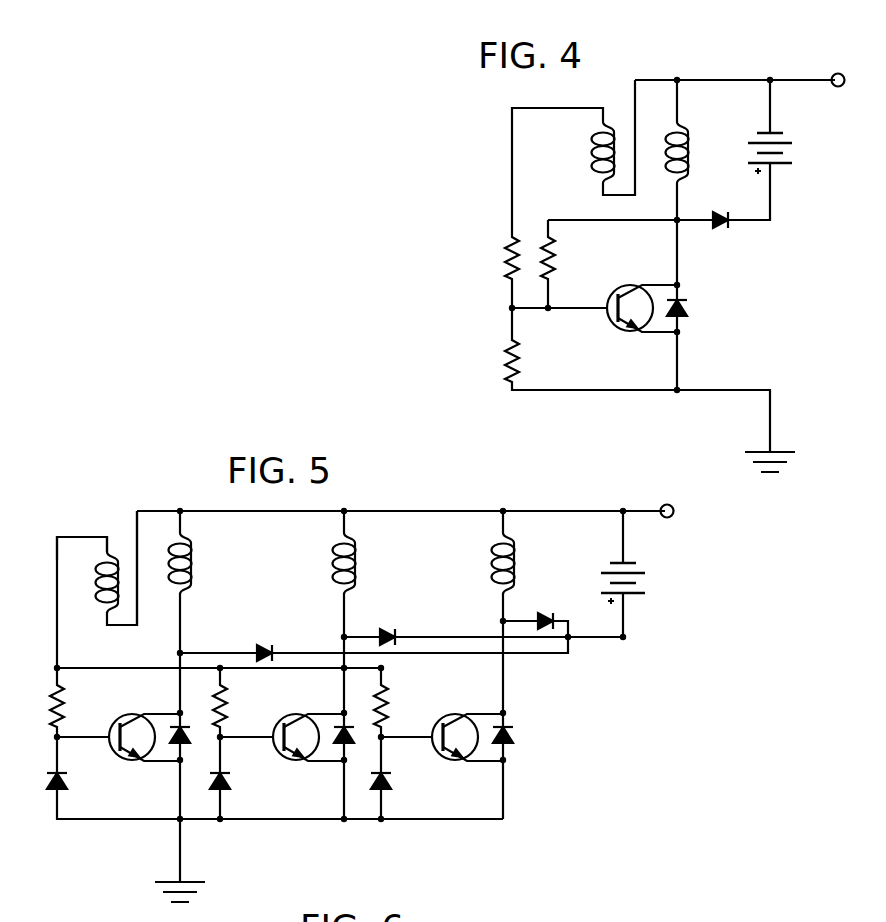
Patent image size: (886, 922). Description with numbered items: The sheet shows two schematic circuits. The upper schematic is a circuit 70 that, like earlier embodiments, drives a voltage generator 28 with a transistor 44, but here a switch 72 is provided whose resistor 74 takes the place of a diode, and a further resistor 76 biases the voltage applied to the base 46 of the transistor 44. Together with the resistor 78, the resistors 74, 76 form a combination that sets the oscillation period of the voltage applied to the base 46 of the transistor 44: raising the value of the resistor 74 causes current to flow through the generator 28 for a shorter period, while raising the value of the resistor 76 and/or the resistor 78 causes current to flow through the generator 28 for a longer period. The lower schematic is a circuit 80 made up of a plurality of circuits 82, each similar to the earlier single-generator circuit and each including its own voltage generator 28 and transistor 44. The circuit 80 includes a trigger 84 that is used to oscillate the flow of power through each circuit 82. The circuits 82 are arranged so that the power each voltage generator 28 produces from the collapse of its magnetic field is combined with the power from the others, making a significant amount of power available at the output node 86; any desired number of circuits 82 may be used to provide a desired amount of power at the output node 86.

In FIG. 4, the voltage generator 28 is at (702, 75).
In FIG. 5, the voltage generator 28 is at (197, 563).
In FIG. 4, the switch 72 is at (503, 188).
In FIG. 4, the resistor 78 is at (502, 258).
In FIG. 4, the resistor 76 is at (557, 260).
In FIG. 4, the resistor 74 is at (502, 358).
In FIG. 4, the circuit 70 is at (753, 321).
In FIG. 5, the circuit 80 is at (113, 502).
In FIG. 5, the trigger 84 is at (97, 518).
In FIG. 5, the output node 86 is at (623, 637).
In FIG. 5, the base 46 is at (110, 737).
In FIG. 5, the transistor 44 is at (122, 760).
In FIG. 5, the circuit 82 is at (105, 832).